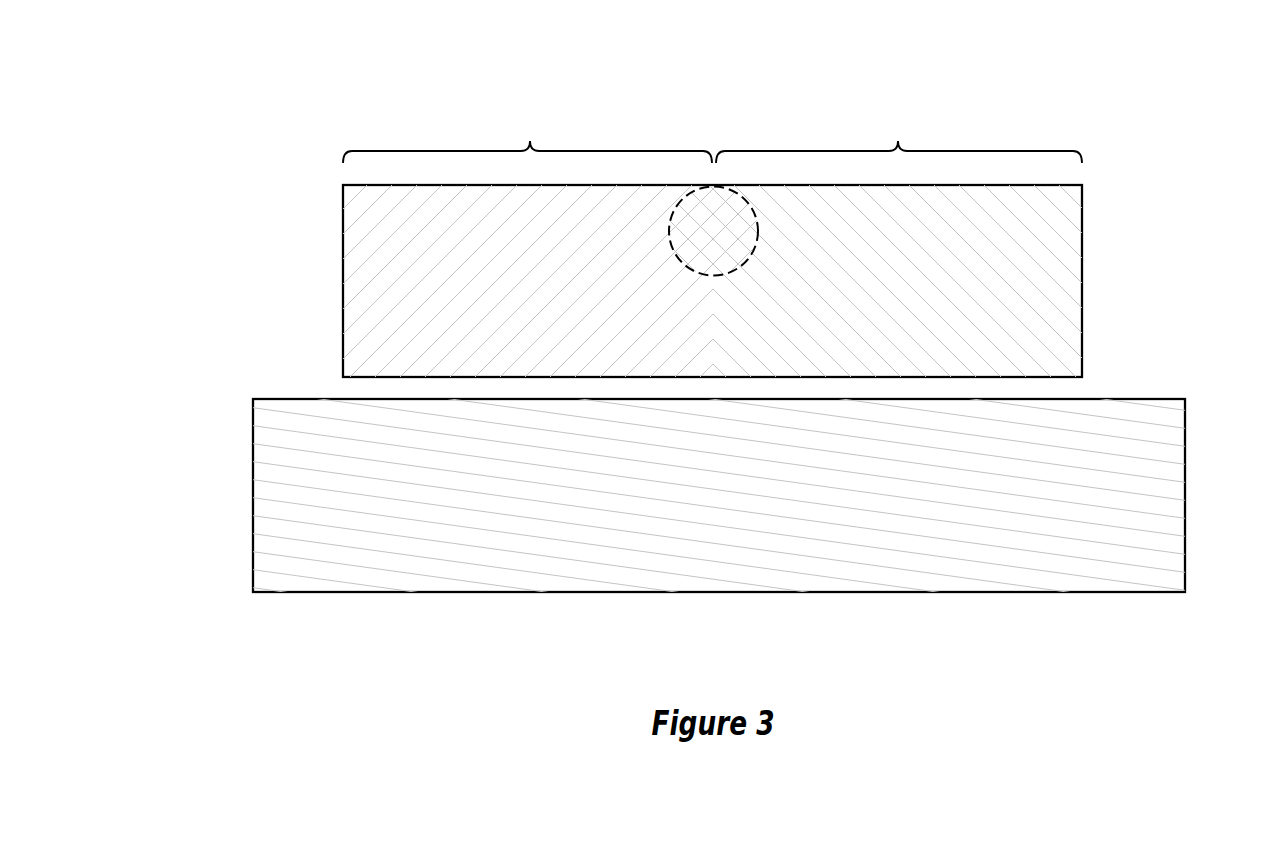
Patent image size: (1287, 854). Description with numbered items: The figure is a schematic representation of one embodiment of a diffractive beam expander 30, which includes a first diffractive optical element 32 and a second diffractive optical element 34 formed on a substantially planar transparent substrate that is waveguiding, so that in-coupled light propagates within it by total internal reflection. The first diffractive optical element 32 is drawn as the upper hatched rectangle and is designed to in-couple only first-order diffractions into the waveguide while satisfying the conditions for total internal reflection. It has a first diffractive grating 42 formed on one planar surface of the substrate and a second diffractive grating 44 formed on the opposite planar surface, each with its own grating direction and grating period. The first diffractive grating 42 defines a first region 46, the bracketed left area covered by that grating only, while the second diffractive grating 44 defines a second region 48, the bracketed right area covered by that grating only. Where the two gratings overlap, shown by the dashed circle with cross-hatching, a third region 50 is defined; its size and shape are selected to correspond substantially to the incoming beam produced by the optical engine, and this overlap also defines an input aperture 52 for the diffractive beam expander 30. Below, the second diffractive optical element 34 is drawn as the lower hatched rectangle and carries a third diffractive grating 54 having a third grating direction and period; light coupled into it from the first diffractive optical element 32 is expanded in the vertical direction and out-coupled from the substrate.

The diffractive beam expander 30 is at (257, 95).
The first diffractive optical element 32 is at (343, 218).
The second diffractive optical element 34 is at (253, 456).
The first diffractive grating 42 is at (402, 262).
The second diffractive grating 44 is at (1077, 246).
The first region 46 is at (527, 136).
The second region 48 is at (899, 136).
The third region 50 is at (735, 197).
The input aperture 52 is at (682, 197).
The third diffractive grating 54 is at (1173, 477).